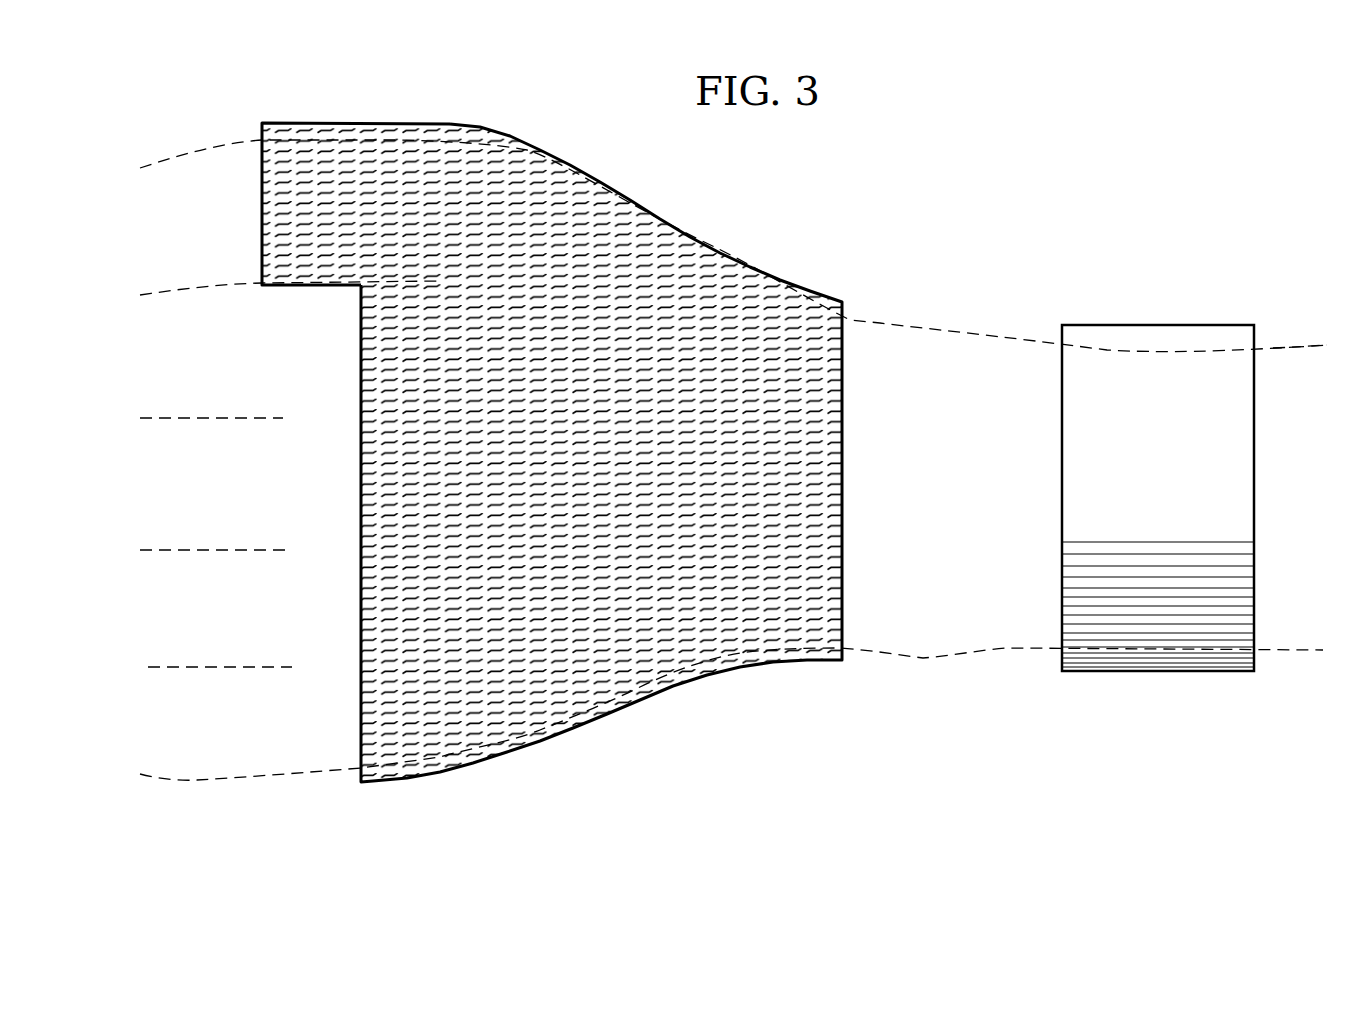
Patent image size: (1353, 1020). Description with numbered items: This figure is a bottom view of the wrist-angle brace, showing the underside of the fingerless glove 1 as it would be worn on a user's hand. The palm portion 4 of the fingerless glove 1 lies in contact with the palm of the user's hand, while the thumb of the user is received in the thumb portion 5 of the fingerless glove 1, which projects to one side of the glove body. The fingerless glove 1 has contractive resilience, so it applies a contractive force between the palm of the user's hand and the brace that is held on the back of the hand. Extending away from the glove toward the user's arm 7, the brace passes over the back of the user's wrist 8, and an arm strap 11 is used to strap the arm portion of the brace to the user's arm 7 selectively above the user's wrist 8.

The fingerless glove 1 is at (870, 716).
The palm portion 4 is at (537, 478).
The thumb portion 5 is at (322, 209).
The user's arm 7 is at (1303, 348).
The user's wrist 8 is at (945, 483).
The arm strap 11 is at (1171, 483).